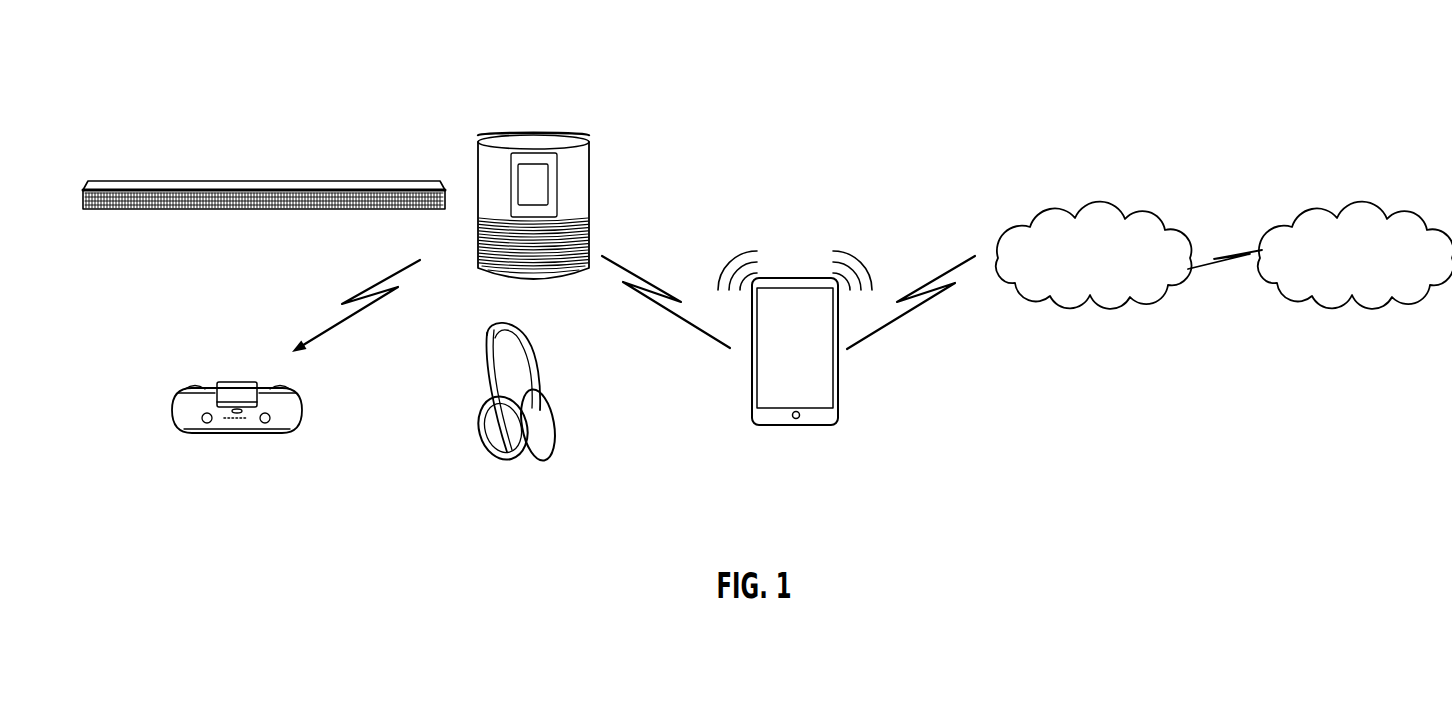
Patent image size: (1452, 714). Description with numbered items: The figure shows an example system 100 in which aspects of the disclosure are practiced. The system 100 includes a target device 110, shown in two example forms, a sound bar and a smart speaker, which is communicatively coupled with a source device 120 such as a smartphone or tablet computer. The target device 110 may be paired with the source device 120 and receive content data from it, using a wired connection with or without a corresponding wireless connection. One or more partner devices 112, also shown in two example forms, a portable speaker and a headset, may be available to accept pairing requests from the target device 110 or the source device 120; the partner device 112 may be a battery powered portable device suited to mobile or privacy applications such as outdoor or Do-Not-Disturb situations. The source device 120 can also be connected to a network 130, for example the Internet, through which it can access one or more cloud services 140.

The system 100 is at (1312, 76).
The target device 110 is at (318, 181).
The partner device 112 is at (237, 435).
The source device 120 is at (793, 428).
The network 130 is at (1090, 298).
The cloud services 140 is at (1357, 298).